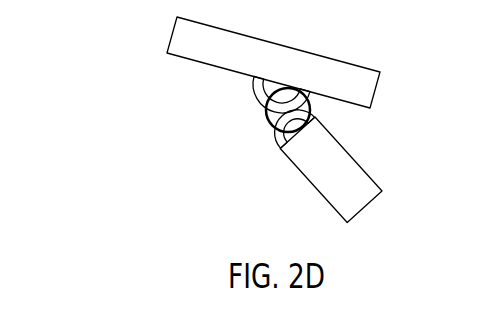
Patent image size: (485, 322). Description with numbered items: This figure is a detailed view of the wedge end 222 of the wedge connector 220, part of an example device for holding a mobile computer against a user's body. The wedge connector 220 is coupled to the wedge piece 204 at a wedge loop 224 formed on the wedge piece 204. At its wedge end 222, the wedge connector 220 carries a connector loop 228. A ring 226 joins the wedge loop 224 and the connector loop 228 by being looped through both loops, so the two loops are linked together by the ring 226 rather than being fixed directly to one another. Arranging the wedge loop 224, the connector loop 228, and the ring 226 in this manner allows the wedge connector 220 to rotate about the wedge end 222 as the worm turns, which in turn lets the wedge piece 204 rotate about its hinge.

The wedge end 222 is at (99, 46).
The wedge piece 204 is at (277, 44).
The wedge connector 220 is at (323, 198).
The wedge loop 224 is at (252, 82).
The ring 226 is at (266, 120).
The connector loop 228 is at (276, 137).